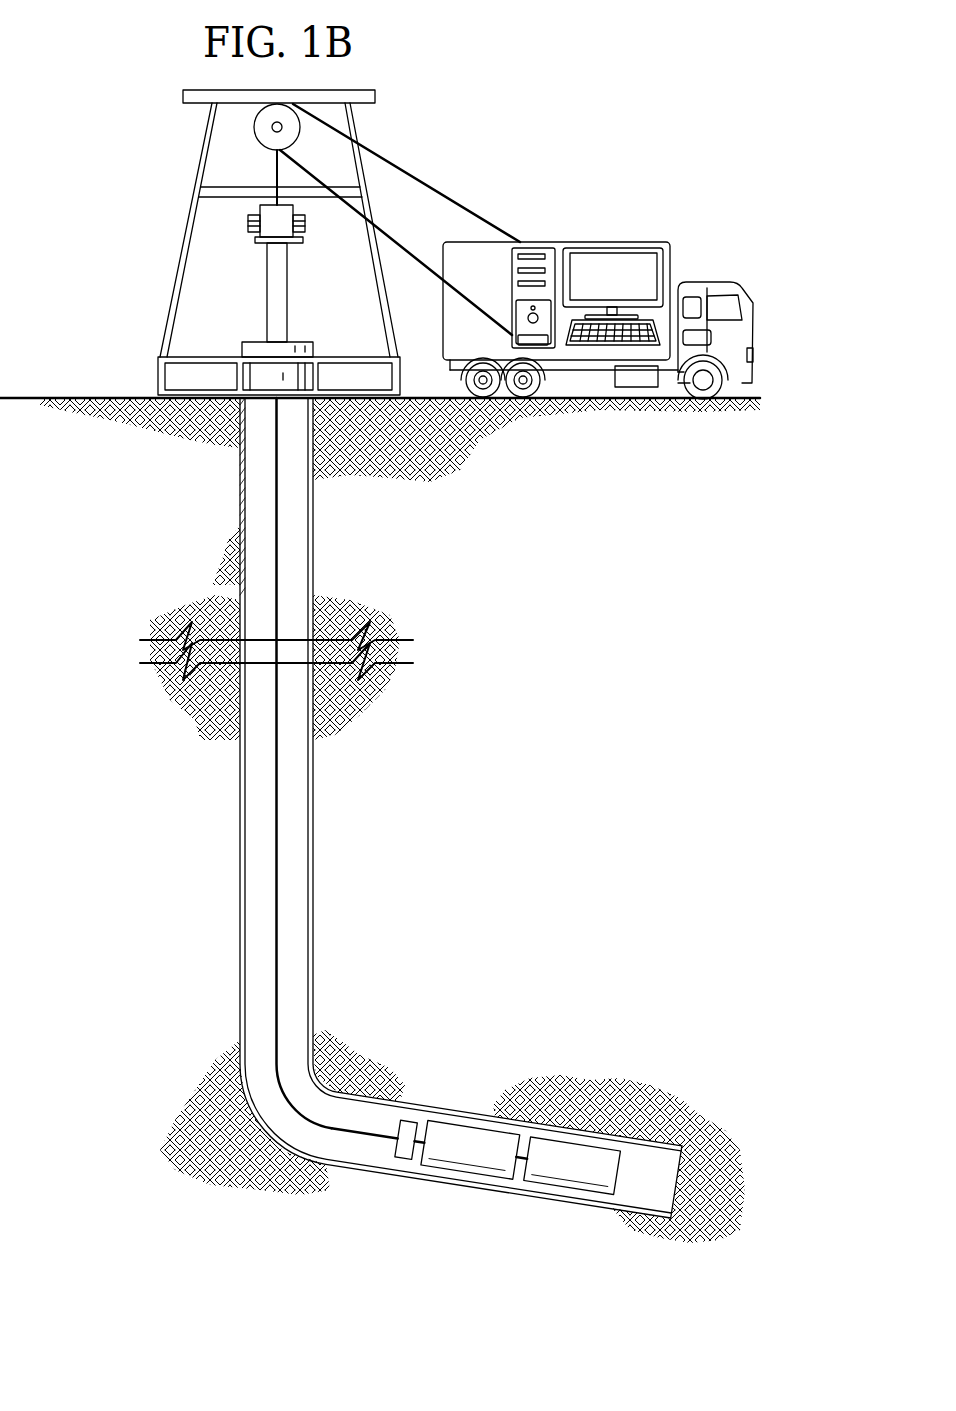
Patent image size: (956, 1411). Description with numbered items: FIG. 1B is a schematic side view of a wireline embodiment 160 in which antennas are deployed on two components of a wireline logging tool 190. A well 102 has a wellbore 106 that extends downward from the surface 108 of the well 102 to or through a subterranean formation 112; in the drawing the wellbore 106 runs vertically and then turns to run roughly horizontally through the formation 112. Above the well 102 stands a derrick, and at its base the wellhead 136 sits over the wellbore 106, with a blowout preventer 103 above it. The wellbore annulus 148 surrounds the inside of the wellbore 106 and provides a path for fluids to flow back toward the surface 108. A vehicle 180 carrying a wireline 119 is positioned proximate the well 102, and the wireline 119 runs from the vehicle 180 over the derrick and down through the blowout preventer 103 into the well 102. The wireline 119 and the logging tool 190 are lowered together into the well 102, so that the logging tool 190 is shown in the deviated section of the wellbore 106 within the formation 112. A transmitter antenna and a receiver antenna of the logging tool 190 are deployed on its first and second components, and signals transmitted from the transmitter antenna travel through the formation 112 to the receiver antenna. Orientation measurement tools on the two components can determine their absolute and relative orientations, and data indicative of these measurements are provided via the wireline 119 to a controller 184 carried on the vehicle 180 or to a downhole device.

The wireline embodiment 160 is at (100, 58).
The wireline 119 is at (277, 170).
The blowout preventer 103 is at (267, 276).
The wellhead 136 is at (256, 341).
The well 102 is at (298, 334).
The surface 108 is at (97, 396).
The controller 184 is at (533, 247).
The vehicle 180 is at (590, 246).
The wellbore annulus 148 is at (257, 485).
The wellbore 106 is at (315, 548).
The subterranean formation 112 is at (478, 1064).
The wireline logging tool 190 is at (528, 1246).